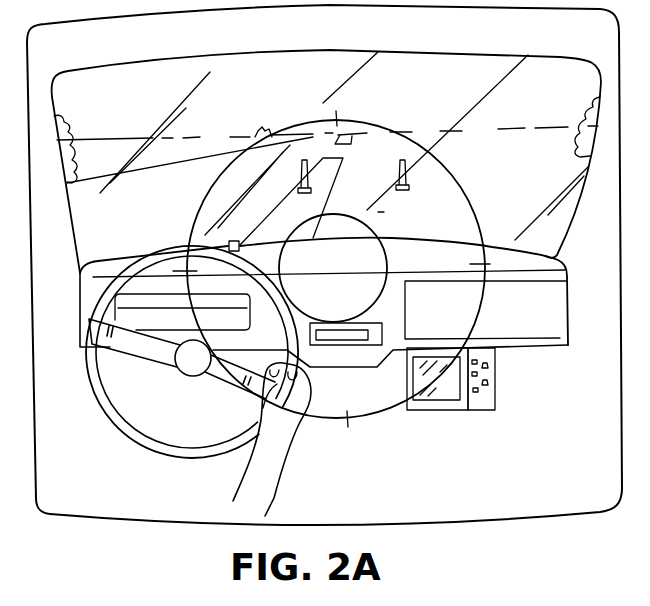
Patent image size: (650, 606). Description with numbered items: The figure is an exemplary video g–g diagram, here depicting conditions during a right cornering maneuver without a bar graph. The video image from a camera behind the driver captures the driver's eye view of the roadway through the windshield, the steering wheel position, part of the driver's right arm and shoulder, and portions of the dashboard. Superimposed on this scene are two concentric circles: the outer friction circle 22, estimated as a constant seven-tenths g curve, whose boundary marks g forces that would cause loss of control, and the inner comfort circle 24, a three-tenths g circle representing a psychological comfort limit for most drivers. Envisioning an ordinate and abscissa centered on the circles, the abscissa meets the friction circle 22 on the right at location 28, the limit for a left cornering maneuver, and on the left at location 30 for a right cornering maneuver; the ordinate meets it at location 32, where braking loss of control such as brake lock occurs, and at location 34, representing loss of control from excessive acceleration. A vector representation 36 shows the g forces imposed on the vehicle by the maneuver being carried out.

The friction circle 22 is at (458, 193).
The comfort circle 24 is at (353, 216).
The left cornering loss-of-control location 28 is at (481, 264).
The right cornering loss-of-control location 30 is at (180, 271).
The braking loss-of-control location 32 is at (350, 118).
The acceleration loss-of-control location 34 is at (348, 427).
The vector representation 36 is at (230, 241).